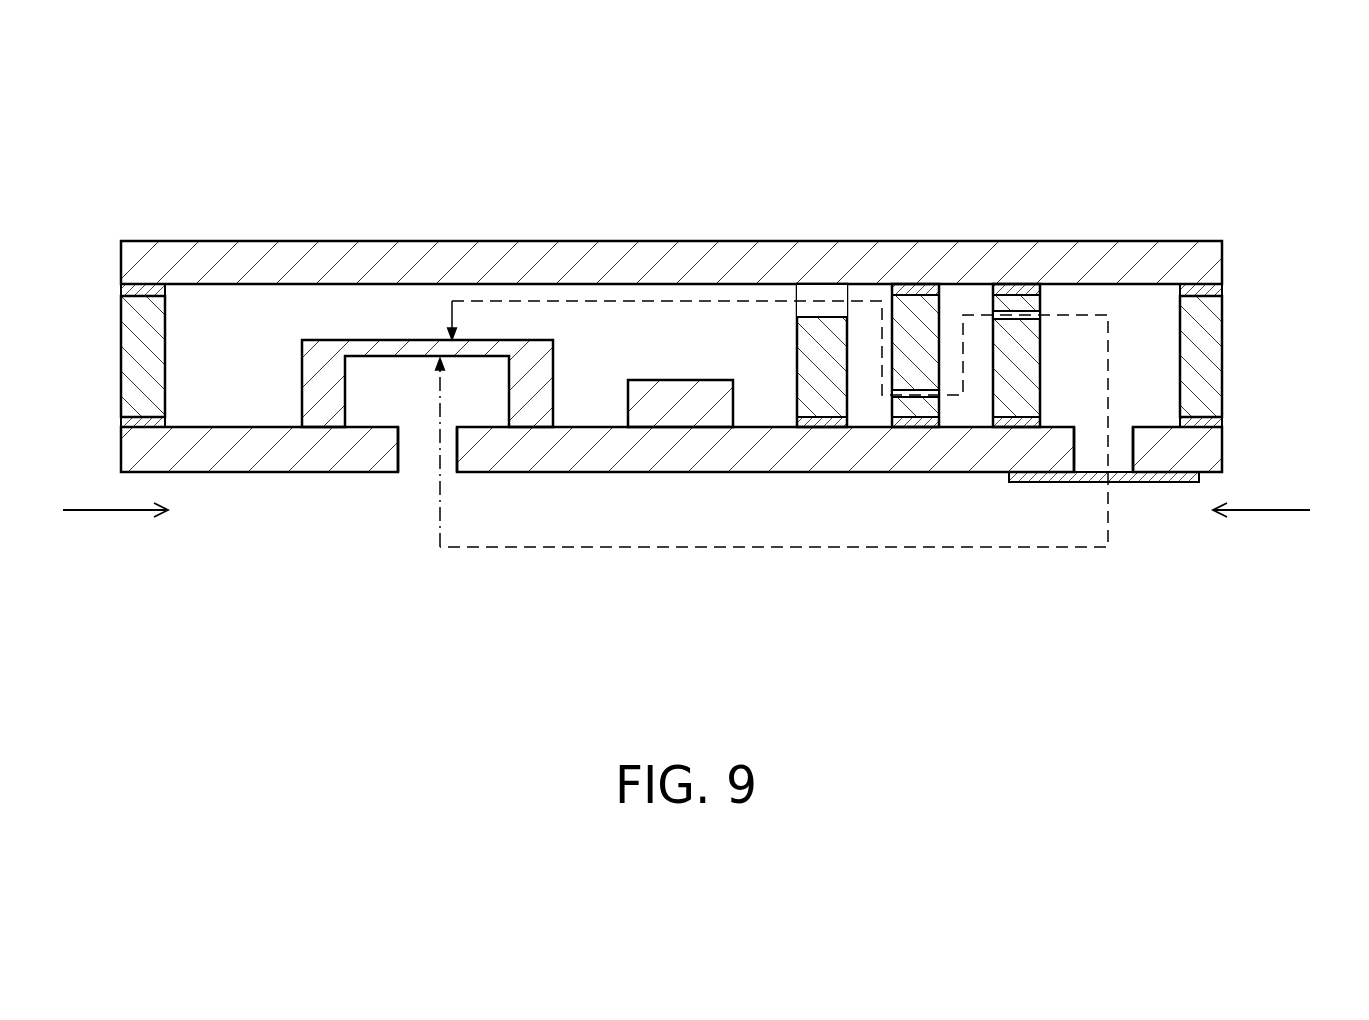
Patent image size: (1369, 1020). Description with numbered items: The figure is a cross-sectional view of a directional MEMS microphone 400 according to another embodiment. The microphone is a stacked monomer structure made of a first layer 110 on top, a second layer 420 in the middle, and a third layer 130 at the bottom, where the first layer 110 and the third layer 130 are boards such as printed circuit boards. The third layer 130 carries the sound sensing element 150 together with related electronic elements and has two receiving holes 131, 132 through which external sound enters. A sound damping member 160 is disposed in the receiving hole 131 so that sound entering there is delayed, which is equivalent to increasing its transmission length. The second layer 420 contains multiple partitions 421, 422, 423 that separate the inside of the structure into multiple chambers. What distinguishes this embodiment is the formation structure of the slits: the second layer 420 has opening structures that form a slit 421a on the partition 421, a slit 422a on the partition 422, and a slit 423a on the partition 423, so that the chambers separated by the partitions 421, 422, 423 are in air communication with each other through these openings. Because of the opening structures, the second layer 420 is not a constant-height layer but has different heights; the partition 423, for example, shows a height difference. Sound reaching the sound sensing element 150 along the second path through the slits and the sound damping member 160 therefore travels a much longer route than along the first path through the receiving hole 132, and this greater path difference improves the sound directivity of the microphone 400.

The directional MEMS microphone 400 is at (1338, 97).
The first layer 110 is at (1202, 262).
The second layer 420 is at (1213, 333).
The third layer 130 is at (1205, 452).
The receiving hole 131 is at (1122, 447).
The receiving hole 132 is at (410, 468).
The sound sensing element 150 is at (350, 348).
The sound damping member 160 is at (1160, 477).
The partition 421 is at (1000, 402).
The slit 421a is at (1045, 312).
The partition 422 is at (940, 310).
The slit 422a is at (889, 397).
The partition 423 is at (807, 360).
The slit 423a is at (797, 292).